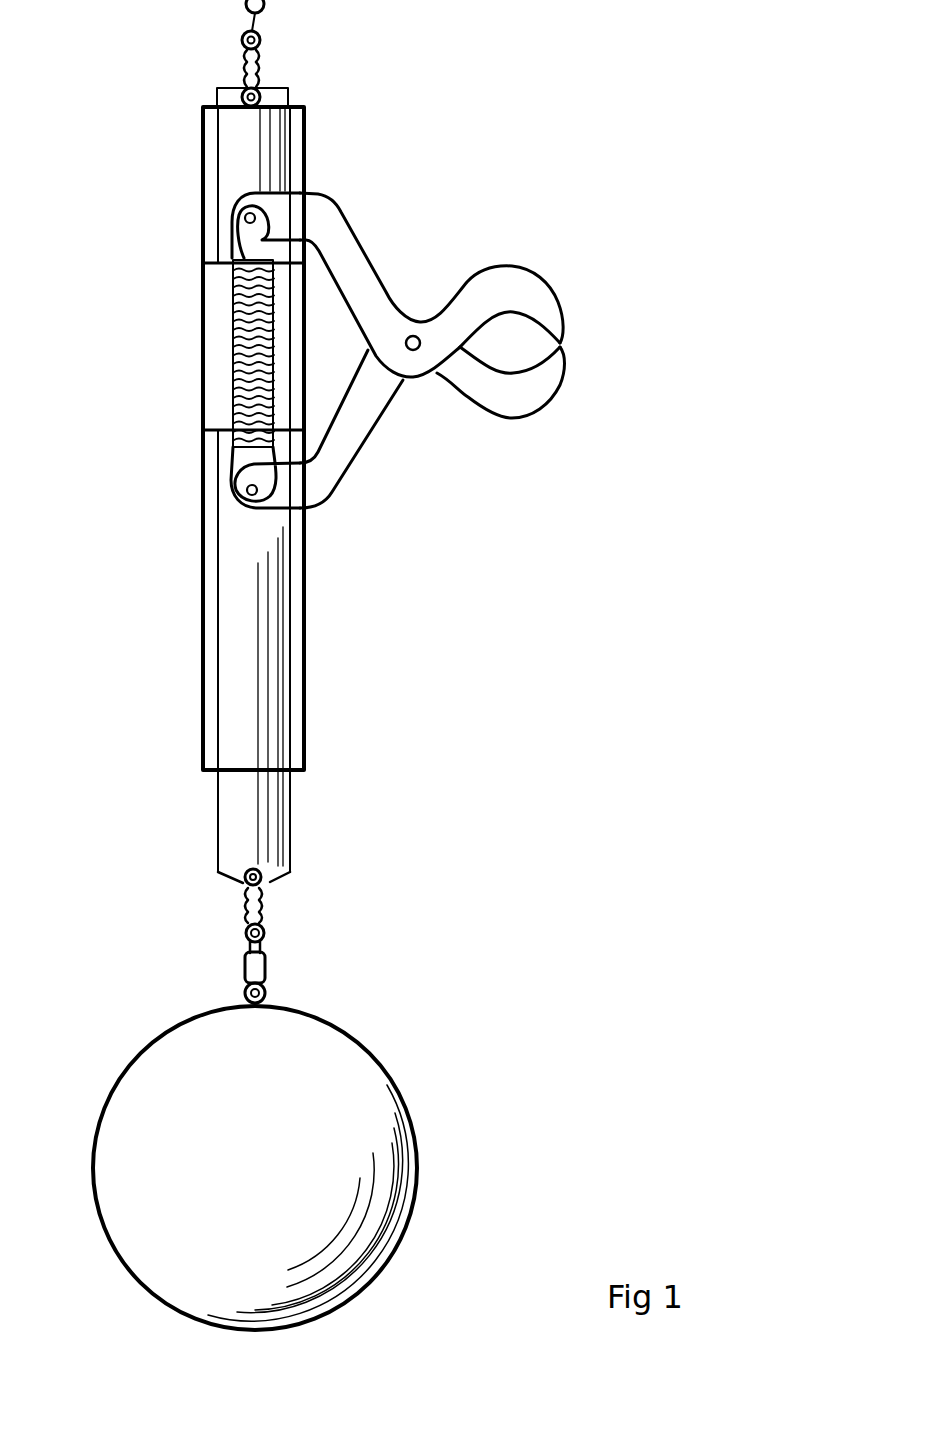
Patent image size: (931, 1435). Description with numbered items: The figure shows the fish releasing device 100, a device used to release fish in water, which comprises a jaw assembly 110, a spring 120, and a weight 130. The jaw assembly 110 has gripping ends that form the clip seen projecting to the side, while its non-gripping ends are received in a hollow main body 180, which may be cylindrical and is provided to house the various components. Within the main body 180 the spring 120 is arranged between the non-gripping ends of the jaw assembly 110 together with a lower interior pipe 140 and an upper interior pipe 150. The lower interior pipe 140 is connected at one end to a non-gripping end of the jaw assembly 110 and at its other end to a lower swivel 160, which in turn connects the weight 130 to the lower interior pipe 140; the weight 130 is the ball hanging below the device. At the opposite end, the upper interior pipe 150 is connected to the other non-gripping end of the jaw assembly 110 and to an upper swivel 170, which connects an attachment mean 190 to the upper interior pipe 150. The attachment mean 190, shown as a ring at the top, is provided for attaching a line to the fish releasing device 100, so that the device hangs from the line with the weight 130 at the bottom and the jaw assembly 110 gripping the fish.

The fish releasing device 100 is at (457, 665).
The jaw assembly 110 is at (518, 430).
The spring 120 is at (235, 333).
The weight 130 is at (383, 1115).
The lower interior pipe 140 is at (270, 837).
The upper interior pipe 150 is at (277, 97).
The lower swivel 160 is at (233, 908).
The upper swivel 170 is at (222, 58).
The main body 180 is at (305, 163).
The attachment mean 190 is at (275, 5).